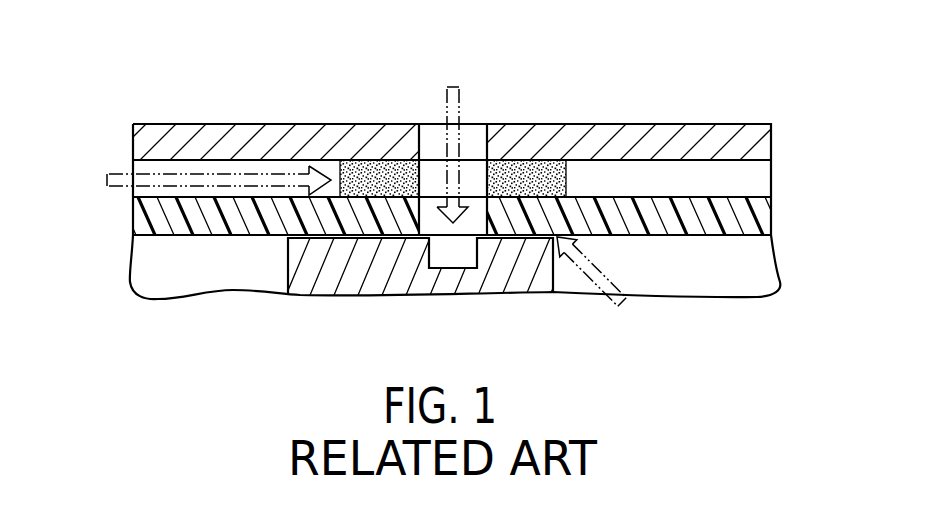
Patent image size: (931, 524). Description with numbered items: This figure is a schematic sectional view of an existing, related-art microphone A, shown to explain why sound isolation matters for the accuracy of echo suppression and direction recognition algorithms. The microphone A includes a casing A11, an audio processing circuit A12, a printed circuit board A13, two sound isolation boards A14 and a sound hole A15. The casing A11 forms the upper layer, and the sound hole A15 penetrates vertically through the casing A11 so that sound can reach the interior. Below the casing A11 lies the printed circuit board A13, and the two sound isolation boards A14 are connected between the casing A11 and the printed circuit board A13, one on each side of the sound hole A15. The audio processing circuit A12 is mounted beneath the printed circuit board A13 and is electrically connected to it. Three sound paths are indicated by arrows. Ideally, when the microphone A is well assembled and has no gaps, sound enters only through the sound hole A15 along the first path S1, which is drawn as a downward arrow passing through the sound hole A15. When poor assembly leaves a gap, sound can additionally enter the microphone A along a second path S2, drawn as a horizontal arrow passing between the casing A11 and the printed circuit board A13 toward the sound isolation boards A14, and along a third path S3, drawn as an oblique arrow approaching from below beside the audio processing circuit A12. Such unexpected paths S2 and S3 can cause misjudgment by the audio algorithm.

The microphone A is at (135, 22).
The casing A11 is at (757, 143).
The audio processing circuit A12 is at (503, 273).
The printed circuit board A13 is at (212, 217).
The sound isolation boards A14 is at (370, 177).
The sound hole A15 is at (476, 137).
The first path S1 is at (447, 110).
The second path S2 is at (108, 186).
The third path S3 is at (602, 285).